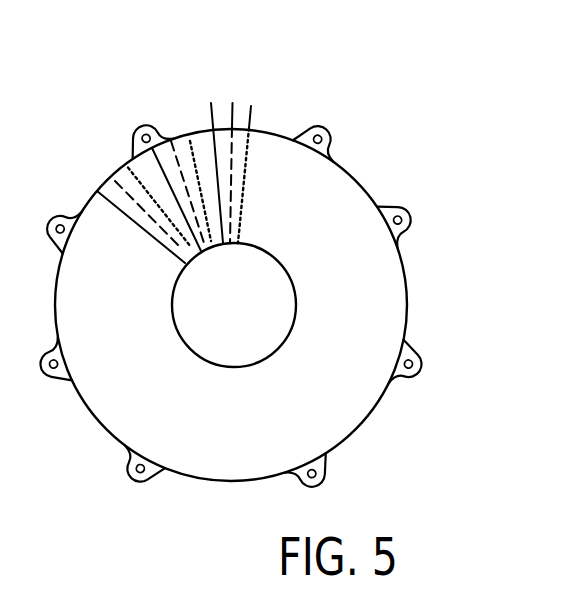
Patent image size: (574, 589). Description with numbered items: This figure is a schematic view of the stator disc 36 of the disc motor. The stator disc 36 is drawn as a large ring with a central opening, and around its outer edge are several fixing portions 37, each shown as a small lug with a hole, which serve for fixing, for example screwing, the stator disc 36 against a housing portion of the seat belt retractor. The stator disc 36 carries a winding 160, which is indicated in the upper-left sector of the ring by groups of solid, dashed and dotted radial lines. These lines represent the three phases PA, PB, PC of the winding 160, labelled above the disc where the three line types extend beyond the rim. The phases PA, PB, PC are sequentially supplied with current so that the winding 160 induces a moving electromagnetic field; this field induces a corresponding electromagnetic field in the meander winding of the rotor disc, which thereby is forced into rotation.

The stator disc 36 is at (208, 487).
The fixing portion 37 is at (124, 474).
The winding 160 is at (263, 155).
The phase Pa PA is at (212, 118).
The phase Pb PB is at (229, 100).
The phase Pc PC is at (254, 99).